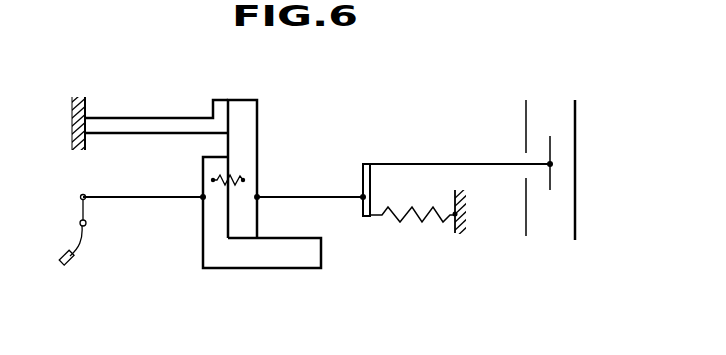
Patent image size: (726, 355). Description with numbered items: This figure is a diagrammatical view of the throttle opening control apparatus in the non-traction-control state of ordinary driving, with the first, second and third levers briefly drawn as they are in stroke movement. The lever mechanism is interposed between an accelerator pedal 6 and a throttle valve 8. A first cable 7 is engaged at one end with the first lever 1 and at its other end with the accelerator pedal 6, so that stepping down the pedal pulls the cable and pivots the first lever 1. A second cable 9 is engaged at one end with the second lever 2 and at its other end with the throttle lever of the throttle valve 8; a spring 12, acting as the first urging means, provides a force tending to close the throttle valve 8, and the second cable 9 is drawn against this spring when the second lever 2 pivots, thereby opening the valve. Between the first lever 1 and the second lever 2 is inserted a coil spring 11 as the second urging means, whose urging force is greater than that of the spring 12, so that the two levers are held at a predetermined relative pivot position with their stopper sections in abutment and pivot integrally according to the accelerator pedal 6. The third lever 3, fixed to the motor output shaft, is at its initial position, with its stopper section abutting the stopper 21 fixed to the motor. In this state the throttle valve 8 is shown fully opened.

The first lever 1 is at (243, 258).
The second lever 2 is at (250, 121).
The third lever 3 is at (145, 117).
The accelerator pedal 6 is at (80, 248).
The first cable 7 is at (166, 200).
The throttle valve 8 is at (552, 153).
The second cable 9 is at (302, 197).
The coil spring 11 is at (235, 174).
The spring 12 is at (420, 222).
The stopper 21 is at (80, 97).